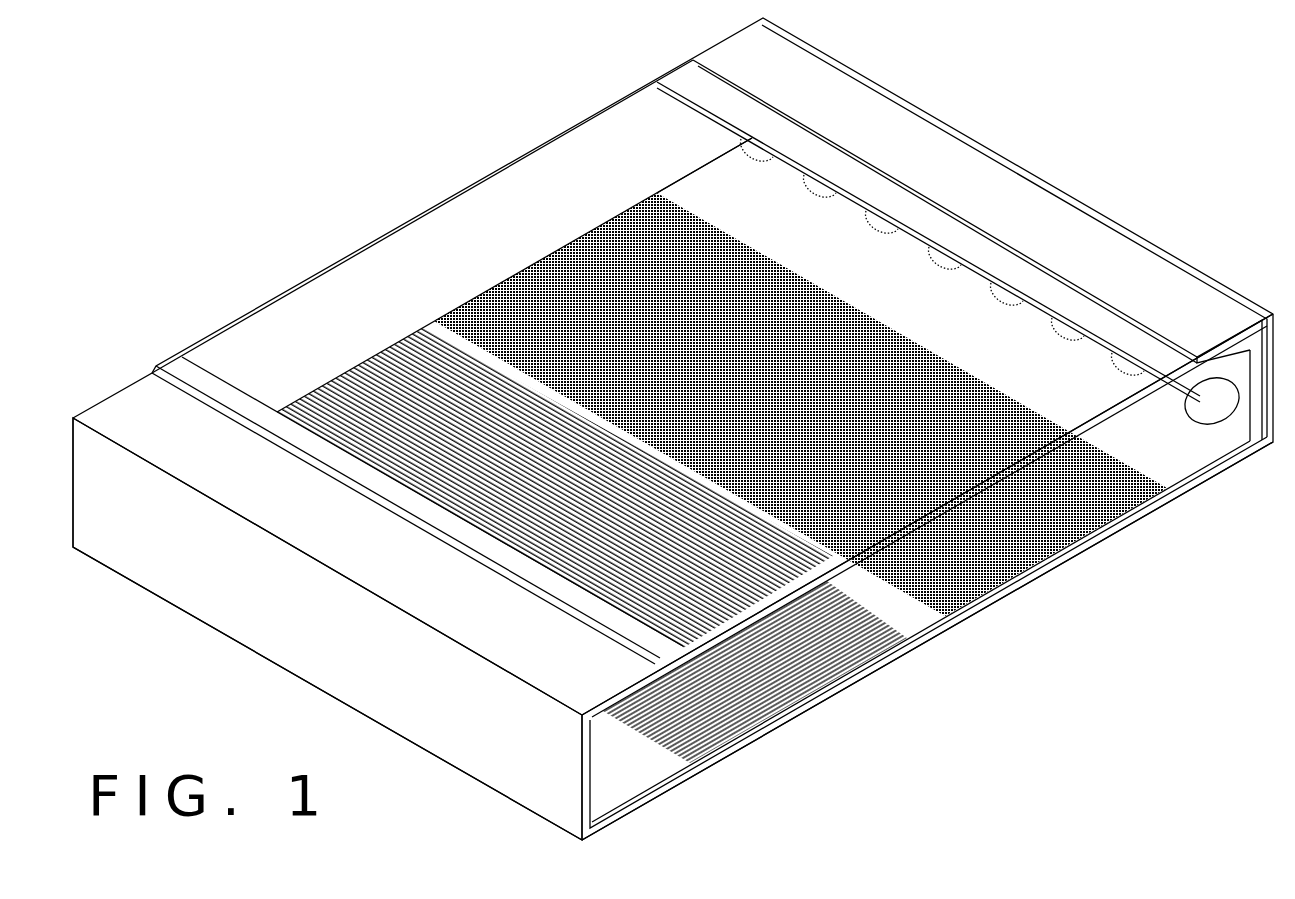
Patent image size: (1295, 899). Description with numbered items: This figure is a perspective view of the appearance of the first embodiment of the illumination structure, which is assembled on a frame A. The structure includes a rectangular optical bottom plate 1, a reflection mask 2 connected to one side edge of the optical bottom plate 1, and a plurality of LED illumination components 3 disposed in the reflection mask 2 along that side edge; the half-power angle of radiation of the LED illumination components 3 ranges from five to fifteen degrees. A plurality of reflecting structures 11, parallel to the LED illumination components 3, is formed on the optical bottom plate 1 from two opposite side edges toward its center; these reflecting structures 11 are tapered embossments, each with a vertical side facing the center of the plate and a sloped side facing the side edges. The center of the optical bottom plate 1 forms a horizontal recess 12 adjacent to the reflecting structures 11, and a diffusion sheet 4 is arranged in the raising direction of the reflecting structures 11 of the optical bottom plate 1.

The optical bottom plate 1 is at (997, 598).
The reflecting structures 11 is at (1010, 590).
The horizontal recess 12 is at (930, 632).
The reflection mask 2 is at (1190, 452).
The LED illumination components 3 is at (1213, 418).
The diffusion sheet 4 is at (1128, 374).
The frame A is at (465, 764).